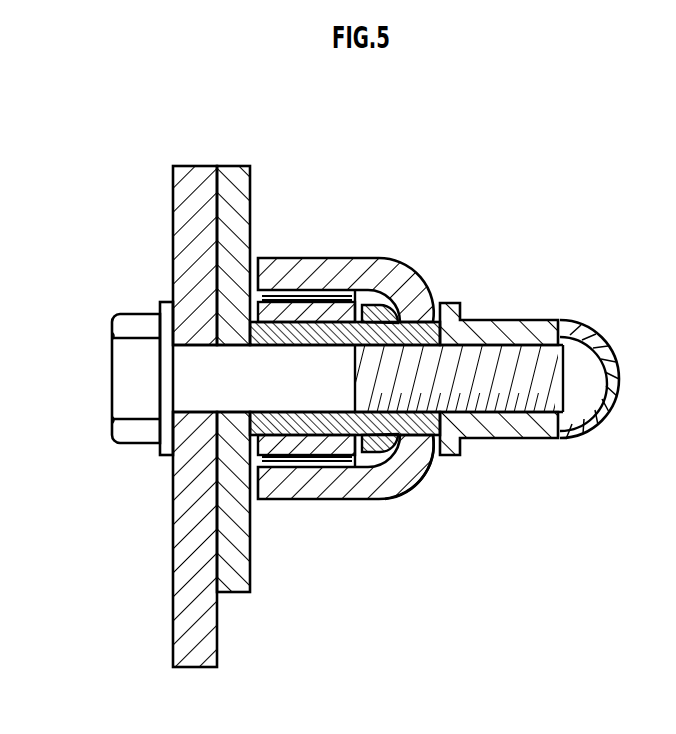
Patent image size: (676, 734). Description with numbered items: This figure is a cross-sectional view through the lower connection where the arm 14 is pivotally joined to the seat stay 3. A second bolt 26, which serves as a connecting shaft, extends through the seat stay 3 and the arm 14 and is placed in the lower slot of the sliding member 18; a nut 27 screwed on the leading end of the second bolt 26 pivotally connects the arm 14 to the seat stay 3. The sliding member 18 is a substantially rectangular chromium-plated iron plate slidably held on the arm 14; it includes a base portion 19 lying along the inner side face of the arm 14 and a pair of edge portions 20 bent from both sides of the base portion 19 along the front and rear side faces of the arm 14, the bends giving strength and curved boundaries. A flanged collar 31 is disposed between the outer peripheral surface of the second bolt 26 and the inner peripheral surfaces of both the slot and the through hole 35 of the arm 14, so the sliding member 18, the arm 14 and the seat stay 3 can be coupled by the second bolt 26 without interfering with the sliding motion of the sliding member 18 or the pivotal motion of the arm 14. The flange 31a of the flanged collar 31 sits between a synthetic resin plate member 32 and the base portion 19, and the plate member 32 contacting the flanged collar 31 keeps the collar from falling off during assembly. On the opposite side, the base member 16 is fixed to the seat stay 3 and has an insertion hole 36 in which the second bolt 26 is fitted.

The seat stay 3 is at (173, 650).
The base member 16 is at (238, 594).
The second bolt 26 is at (112, 396).
The insertion hole 36 is at (192, 466).
The through hole 35 is at (276, 343).
The nut 27 is at (510, 316).
The base portion 19 is at (436, 287).
The flanged collar 31 is at (347, 500).
The flange 31a is at (373, 466).
The edge portions 20 is at (352, 256).
The sliding member 18 is at (432, 470).
The plate member 32 is at (290, 462).
The arm 14 is at (310, 300).